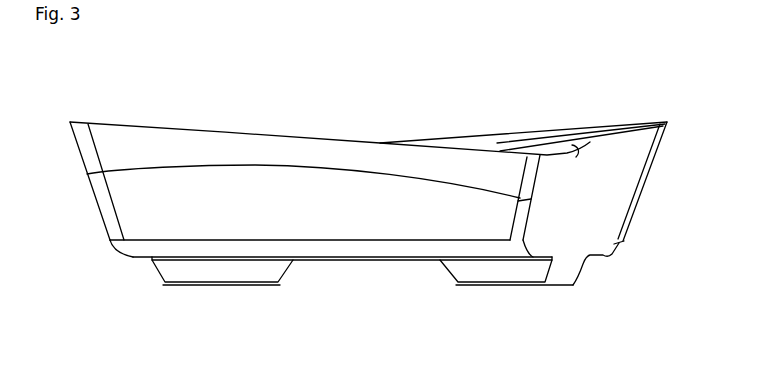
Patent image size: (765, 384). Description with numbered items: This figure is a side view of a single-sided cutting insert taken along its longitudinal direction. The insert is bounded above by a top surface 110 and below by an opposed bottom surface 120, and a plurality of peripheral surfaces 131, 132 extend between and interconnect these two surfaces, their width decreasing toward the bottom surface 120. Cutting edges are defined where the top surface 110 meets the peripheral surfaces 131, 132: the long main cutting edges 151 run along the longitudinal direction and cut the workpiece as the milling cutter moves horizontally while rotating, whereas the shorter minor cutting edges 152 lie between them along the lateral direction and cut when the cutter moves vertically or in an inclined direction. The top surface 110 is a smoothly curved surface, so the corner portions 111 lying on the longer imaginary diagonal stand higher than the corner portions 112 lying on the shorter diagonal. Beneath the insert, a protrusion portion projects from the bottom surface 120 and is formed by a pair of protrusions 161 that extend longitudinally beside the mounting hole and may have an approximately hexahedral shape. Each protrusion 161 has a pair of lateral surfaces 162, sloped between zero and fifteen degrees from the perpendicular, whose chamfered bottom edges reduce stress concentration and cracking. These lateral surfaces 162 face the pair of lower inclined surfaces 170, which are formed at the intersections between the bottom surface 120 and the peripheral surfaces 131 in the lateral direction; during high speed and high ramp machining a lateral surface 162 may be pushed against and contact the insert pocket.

The top surface 110 is at (573, 120).
The corner portions 111 is at (67, 111).
The corner portions 112 is at (549, 170).
The bottom surface 120 is at (139, 265).
The peripheral surface 131 is at (123, 197).
The peripheral surface 132 is at (590, 223).
The main cutting edge 151 is at (147, 126).
The minor cutting edge 152 is at (583, 148).
The protrusion 161 is at (187, 297).
The lateral surface 162 is at (213, 276).
The lower inclined surface 170 is at (368, 256).